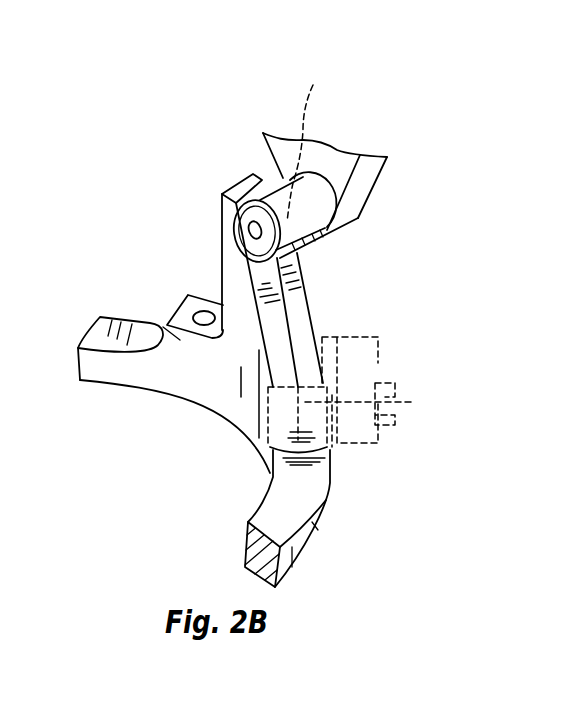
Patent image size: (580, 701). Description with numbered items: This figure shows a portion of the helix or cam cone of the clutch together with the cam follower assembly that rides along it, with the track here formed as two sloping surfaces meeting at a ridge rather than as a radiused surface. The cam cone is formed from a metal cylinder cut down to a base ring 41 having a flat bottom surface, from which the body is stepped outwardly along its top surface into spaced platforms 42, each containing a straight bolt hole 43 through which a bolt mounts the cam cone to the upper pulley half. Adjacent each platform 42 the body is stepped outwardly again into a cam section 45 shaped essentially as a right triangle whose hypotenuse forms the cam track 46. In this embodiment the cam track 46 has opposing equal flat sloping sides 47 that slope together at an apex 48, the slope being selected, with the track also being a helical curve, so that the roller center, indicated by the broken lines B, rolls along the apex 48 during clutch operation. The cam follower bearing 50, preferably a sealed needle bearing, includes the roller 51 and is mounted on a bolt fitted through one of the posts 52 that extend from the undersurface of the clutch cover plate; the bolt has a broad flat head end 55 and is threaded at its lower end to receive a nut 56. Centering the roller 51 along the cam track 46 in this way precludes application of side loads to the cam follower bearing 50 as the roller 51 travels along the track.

The base ring 41 is at (110, 368).
The platform 42 is at (150, 323).
The bolt hole 43 is at (188, 296).
The cam section 45 is at (237, 265).
The cam track 46 is at (317, 285).
The flat sloping sides 47 is at (253, 176).
The apex 48 is at (298, 315).
The cam follower bearing 50 is at (233, 138).
The roller 51 is at (327, 237).
The post 52 is at (322, 167).
The broad flat head end 55 is at (222, 223).
The nut 56 is at (400, 417).
The roller center path B is at (483, 423).